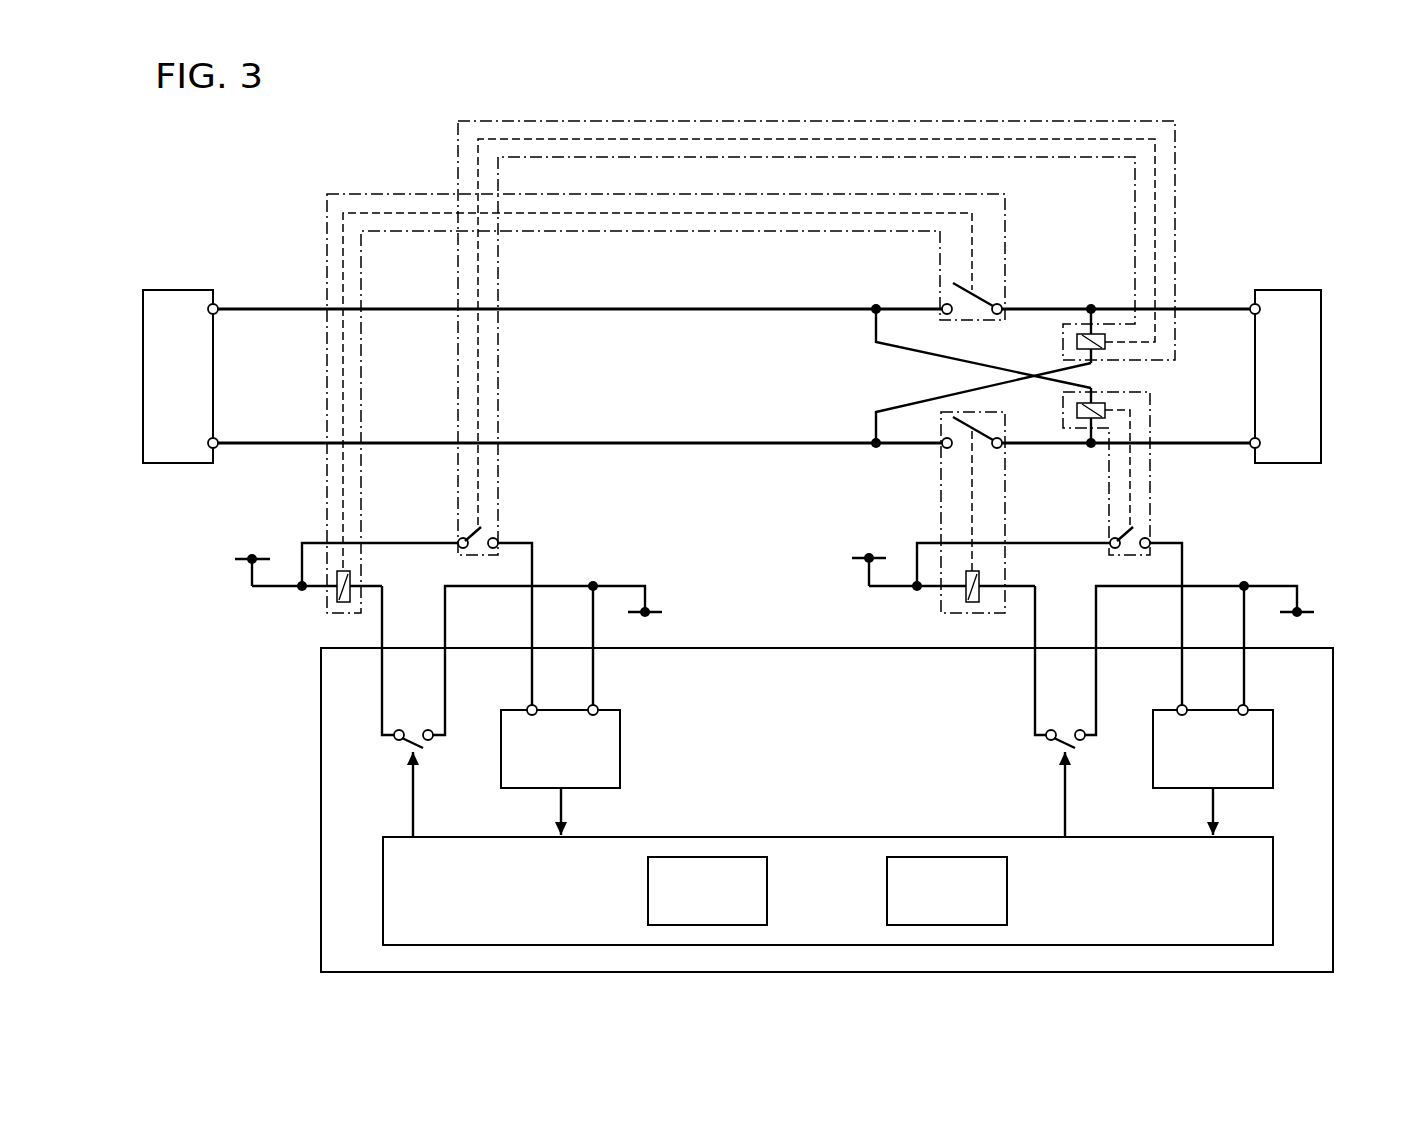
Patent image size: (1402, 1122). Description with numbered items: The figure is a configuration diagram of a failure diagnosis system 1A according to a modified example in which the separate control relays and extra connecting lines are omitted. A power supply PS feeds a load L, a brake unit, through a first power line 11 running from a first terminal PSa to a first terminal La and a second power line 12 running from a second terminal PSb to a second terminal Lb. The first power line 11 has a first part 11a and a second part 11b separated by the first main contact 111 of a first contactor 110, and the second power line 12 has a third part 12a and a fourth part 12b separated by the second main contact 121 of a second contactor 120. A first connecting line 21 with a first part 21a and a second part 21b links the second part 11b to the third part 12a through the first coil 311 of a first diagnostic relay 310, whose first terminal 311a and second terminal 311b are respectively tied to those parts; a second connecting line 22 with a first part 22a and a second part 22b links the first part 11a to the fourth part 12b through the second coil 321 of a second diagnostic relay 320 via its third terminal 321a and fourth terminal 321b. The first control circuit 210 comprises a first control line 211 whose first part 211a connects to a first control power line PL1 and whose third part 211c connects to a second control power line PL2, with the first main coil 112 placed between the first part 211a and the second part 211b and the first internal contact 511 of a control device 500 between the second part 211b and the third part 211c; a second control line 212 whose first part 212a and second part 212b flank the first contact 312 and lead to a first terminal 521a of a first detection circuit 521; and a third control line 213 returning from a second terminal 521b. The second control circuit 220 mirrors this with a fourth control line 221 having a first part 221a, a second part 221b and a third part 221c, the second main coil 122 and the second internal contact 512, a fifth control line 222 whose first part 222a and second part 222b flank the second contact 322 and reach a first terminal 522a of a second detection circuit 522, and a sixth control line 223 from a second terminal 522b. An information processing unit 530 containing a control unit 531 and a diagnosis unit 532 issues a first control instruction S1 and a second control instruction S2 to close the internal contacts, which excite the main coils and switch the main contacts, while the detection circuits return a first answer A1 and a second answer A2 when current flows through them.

The failure diagnosis system 1A is at (1232, 121).
The power supply PS is at (220, 352).
The first terminal of the power supply PSa is at (218, 304).
The second terminal of the power supply PSb is at (218, 447).
The load L is at (1278, 371).
The first terminal of the load La is at (1255, 304).
The second terminal of the load Lb is at (1255, 448).
The first power line 11 is at (734, 258).
The first part of the first power line 11a is at (714, 306).
The second part of the first power line 11b is at (1072, 305).
The second power line 12 is at (734, 486).
The third part of the second power line 12a is at (750, 447).
The fourth part of the second power line 12b is at (1057, 447).
The first contactor 110 is at (358, 192).
The first main contact 111 is at (985, 300).
The first main coil 112 is at (343, 603).
The second contactor 120 is at (940, 484).
The second main contact 121 is at (968, 430).
The second main coil 122 is at (972, 603).
The first connecting line 21 is at (976, 397).
The first part of the first connecting line 21a is at (1094, 331).
The second part of the first connecting line 21b is at (884, 410).
The second connecting line 22 is at (990, 397).
The first part of the second connecting line 22a is at (908, 344).
The second part of the second connecting line 22b is at (1084, 448).
The first diagnostic relay 310 is at (852, 119).
The first coil 311 is at (862, 334).
The first terminal of the first coil 311a is at (1097, 335).
The second terminal of the first coil 311b is at (1097, 350).
The first contact 312 is at (485, 530).
The second diagnostic relay 320 is at (1152, 483).
The second coil 321 is at (1159, 446).
The third terminal of the second coil 321a is at (1096, 403).
The fourth terminal of the second coil 321b is at (1097, 418).
The second contact 322 is at (1135, 528).
The first control circuit 210 is at (444, 601).
The first control line 211 is at (407, 646).
The first part of the first control line 211a is at (278, 589).
The second part of the first control line 211b is at (384, 625).
The third part of the first control line 211c is at (490, 590).
The second control line 212 is at (449, 577).
The first part of the second control line 212a is at (392, 541).
The second part of the second control line 212b is at (533, 552).
The third control line 213 is at (596, 640).
The second control circuit 220 is at (1095, 620).
The fourth control line 221 is at (1078, 669).
The first part of the fourth control line 221a is at (890, 589).
The second part of the fourth control line 221b is at (1033, 635).
The third part of the fourth control line 221c is at (1137, 589).
The fifth control line 222 is at (1044, 607).
The first part of the fifth control line 222a is at (920, 541).
The second part of the fifth control line 222b is at (1184, 578).
The sixth control line 223 is at (1247, 632).
The first control power line PL1 is at (250, 556).
The second control power line PL2 is at (646, 606).
The control device 500 is at (1334, 708).
The first internal contact 511 is at (412, 745).
The second internal contact 512 is at (1060, 745).
The first detection circuit 521 is at (581, 725).
The first terminal of the first detection circuit 521a is at (528, 708).
The second terminal of the first detection circuit 521b is at (597, 708).
The second detection circuit 522 is at (1219, 725).
The first terminal of the second detection circuit 522a is at (1180, 708).
The second terminal of the second detection circuit 522b is at (1280, 693).
The information processing unit 530 is at (825, 836).
The control unit 531 is at (768, 893).
The diagnosis unit 532 is at (1008, 893).
The first control instruction S1 is at (411, 812).
The second control instruction S2 is at (1067, 812).
The first answer A1 is at (563, 806).
The second answer A2 is at (1215, 806).